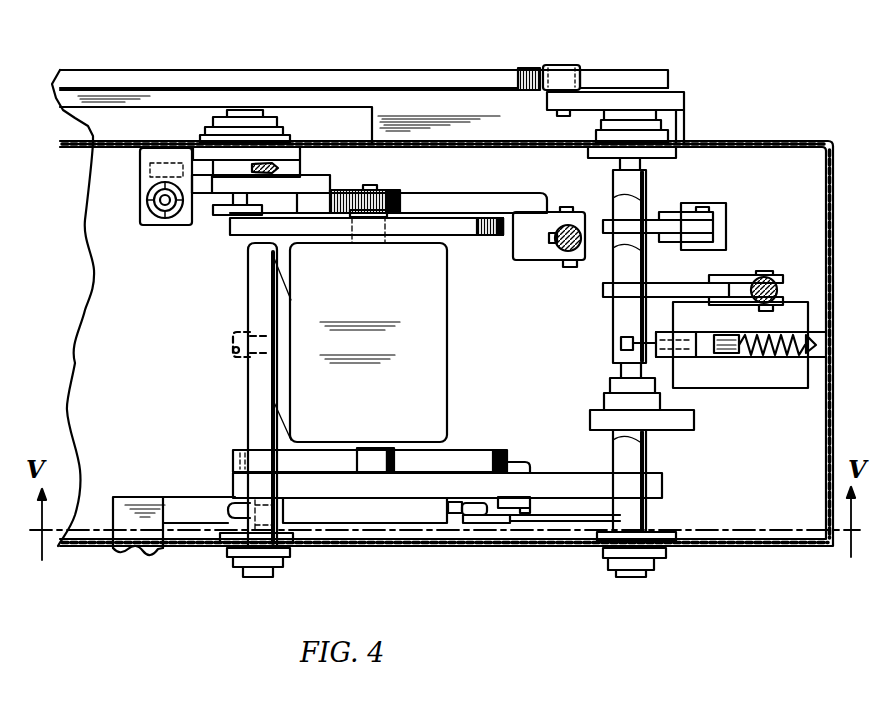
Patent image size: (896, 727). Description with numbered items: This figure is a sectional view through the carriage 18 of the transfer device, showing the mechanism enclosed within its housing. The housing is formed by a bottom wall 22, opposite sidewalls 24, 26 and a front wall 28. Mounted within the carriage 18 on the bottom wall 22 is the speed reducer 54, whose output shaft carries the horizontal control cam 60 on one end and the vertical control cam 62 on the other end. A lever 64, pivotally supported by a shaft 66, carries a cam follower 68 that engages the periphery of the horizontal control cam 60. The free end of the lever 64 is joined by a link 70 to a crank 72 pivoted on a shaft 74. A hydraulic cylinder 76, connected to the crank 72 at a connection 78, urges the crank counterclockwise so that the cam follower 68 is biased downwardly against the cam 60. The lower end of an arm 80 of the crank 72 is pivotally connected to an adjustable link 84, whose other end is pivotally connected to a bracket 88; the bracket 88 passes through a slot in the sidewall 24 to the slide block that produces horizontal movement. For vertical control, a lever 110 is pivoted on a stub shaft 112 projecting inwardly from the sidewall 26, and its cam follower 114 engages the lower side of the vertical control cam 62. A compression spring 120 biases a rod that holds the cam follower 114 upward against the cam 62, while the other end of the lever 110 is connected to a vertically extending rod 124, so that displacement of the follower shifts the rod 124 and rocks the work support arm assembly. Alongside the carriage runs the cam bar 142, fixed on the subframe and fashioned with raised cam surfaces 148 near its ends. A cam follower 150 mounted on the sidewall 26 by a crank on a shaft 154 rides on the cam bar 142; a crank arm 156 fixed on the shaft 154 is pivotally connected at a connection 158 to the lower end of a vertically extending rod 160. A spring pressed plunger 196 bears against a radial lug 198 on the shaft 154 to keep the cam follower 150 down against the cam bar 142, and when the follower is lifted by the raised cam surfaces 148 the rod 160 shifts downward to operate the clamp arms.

The carriage 18 is at (748, 141).
The bottom wall 22 is at (100, 353).
The sidewall 24 is at (722, 547).
The sidewall 26 is at (122, 140).
The front wall 28 is at (834, 229).
The speed reducer 54 is at (437, 343).
The horizontal control cam 60 is at (452, 448).
The vertical control cam 62 is at (475, 226).
The lever 64 is at (330, 487).
The shaft 66 is at (250, 383).
The cam follower 68 is at (375, 460).
The link 70 is at (527, 460).
The crank 72 is at (552, 480).
The shaft 74 is at (650, 200).
The hydraulic cylinder 76 is at (718, 228).
The connection 78 is at (707, 210).
The arm 80 is at (520, 520).
The adjustable link 84 is at (410, 516).
The bracket 88 is at (140, 505).
The lever 110 is at (445, 197).
The stub shaft 112 is at (236, 205).
The cam follower 114 is at (370, 244).
The compression spring 120 is at (160, 218).
The vertically extending rod 124 is at (575, 262).
The cam bar 142 is at (305, 70).
The raised cam surfaces 148 is at (629, 72).
The cam follower 150 is at (567, 67).
The shaft 154 is at (645, 266).
The crank arm 156 is at (680, 292).
The pivotal connection 158 is at (765, 274).
The vertically extending rod 160 is at (782, 290).
The spring pressed plunger 196 is at (622, 324).
The radial lug 198 is at (620, 342).